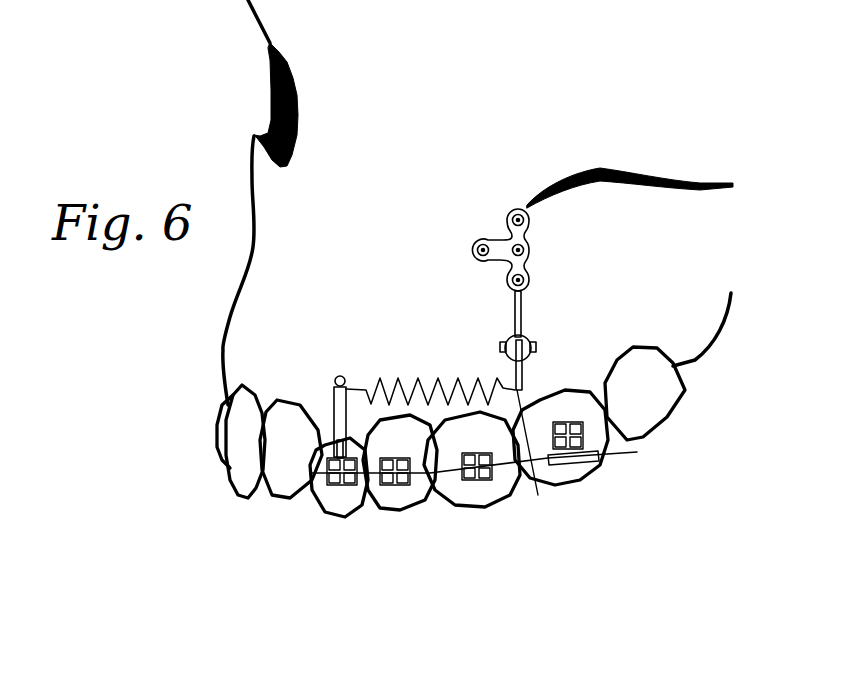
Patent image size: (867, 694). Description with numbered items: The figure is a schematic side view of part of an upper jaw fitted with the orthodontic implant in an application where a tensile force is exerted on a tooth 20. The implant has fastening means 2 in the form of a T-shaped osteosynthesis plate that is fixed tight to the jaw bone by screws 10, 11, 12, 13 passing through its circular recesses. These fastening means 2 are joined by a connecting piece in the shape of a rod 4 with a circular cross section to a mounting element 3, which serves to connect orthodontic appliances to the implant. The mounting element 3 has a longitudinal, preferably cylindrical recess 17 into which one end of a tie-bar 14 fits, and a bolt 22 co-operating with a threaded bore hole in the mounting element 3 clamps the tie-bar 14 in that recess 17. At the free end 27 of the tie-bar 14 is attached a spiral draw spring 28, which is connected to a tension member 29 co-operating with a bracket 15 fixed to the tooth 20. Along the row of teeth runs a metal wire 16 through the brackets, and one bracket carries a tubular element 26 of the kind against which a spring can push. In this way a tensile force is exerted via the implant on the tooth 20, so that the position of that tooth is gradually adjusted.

The fastening means 2 is at (530, 237).
The mounting element 3 is at (504, 330).
The rod 4 is at (516, 312).
The screw 10 is at (526, 278).
The screw 11 is at (512, 243).
The screw 12 is at (517, 212).
The screw 13 is at (476, 246).
The tie-bar 14 is at (520, 380).
The bracket 15 is at (328, 478).
The metal wire 16 is at (435, 477).
The recess 17 is at (522, 340).
The tooth 20 is at (343, 502).
The bolt 22 is at (500, 347).
The tubular element 26 is at (583, 460).
The free end 27 is at (537, 460).
The spiral draw spring 28 is at (410, 385).
The tension member 29 is at (333, 410).